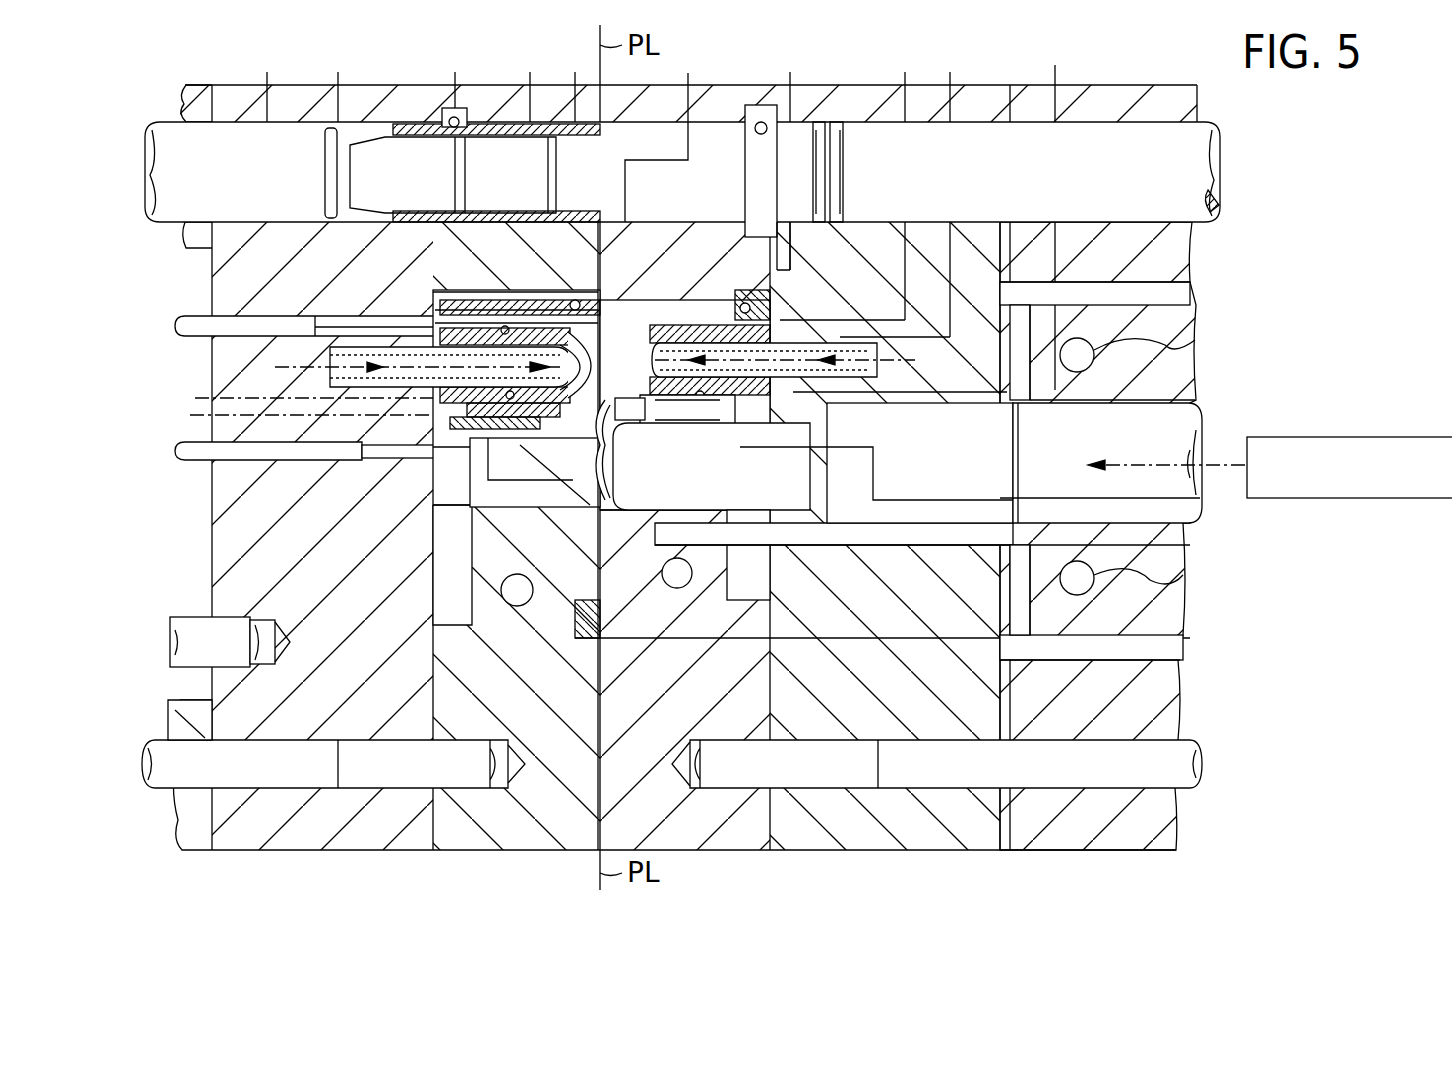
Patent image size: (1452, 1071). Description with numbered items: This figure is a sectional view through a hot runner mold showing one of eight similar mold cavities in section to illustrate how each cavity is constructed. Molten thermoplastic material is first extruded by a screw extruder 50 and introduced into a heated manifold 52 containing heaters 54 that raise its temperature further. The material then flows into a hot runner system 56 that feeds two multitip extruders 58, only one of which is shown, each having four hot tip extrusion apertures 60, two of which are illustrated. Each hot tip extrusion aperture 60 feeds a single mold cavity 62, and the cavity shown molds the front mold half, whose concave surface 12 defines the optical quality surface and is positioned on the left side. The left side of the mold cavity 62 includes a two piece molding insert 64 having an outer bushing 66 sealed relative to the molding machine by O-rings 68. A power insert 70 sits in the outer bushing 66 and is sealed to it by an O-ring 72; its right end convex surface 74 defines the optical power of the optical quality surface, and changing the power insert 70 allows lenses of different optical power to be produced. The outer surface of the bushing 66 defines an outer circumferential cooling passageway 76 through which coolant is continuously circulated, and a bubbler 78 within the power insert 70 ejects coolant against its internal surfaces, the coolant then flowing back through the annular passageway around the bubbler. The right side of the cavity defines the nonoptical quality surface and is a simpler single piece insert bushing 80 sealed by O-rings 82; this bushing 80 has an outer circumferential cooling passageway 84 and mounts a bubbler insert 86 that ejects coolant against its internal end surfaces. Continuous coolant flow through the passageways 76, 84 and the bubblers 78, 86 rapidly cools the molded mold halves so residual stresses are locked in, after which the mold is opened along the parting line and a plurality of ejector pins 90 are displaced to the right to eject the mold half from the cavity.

The concave surface 12 is at (606, 290).
The screw extruder 50 is at (1358, 437).
The heated manifold 52 is at (1085, 403).
The heaters 54 is at (1187, 330).
The hot runner system 56 is at (937, 458).
The multitip extruder 58 is at (745, 503).
The hot tip extrusion aperture 60 is at (630, 448).
The mold cavity 62 is at (622, 290).
The two piece molding insert 64 is at (492, 292).
The outer bushing 66 is at (470, 285).
The O-rings 68 is at (572, 292).
The power insert 70 is at (607, 280).
The O-ring 72 is at (545, 470).
The convex surface 74 is at (640, 400).
The outer circumferential cooling passageway 76 is at (520, 318).
The bubbler 78 is at (405, 400).
The single piece insert bushing 80 is at (660, 322).
The O-rings 82 is at (636, 320).
The outer circumferential cooling passageway 84 is at (660, 320).
The bubbler insert 86 is at (800, 345).
The ejector pins 90 is at (340, 290).